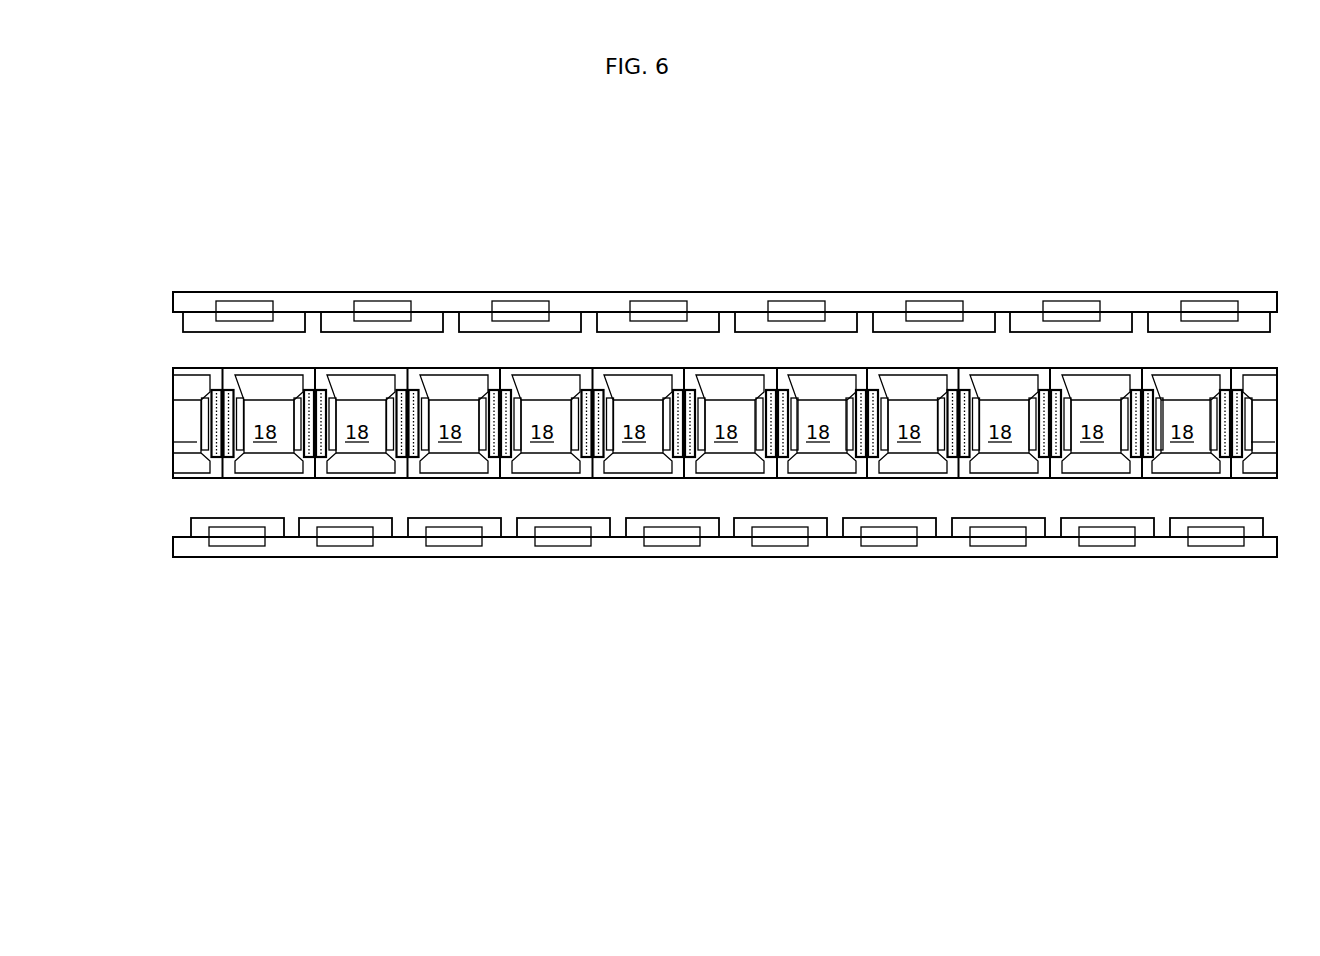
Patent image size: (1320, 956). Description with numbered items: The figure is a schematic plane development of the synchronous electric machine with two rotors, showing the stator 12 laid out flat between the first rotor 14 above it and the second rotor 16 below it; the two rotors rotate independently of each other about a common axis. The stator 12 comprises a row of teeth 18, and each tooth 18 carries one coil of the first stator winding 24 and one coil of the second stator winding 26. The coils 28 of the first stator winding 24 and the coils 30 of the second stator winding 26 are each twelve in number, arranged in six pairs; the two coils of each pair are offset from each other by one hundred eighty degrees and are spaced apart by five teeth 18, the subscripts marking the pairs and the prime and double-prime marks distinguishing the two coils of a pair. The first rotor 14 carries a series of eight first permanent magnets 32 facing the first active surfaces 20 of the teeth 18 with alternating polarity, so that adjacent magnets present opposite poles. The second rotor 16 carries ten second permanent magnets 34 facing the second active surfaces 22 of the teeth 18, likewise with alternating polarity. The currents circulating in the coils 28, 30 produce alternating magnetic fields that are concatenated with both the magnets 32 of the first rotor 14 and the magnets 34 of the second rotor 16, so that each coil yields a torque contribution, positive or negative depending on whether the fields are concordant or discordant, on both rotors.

The stator 12 is at (710, 362).
The first rotor 14 is at (710, 274).
The second rotor 16 is at (711, 586).
The tooth 18 is at (725, 424).
The first active surface 20 is at (227, 368).
The second active surface 22 is at (217, 480).
The first stator winding 24 is at (725, 343).
The second stator winding 26 is at (877, 357).
The coil of the first stator winding 28 is at (727, 407).
The coil of the second stator winding 30 is at (710, 481).
The first permanent magnet 32 is at (168, 317).
The second permanent magnet 34 is at (734, 565).